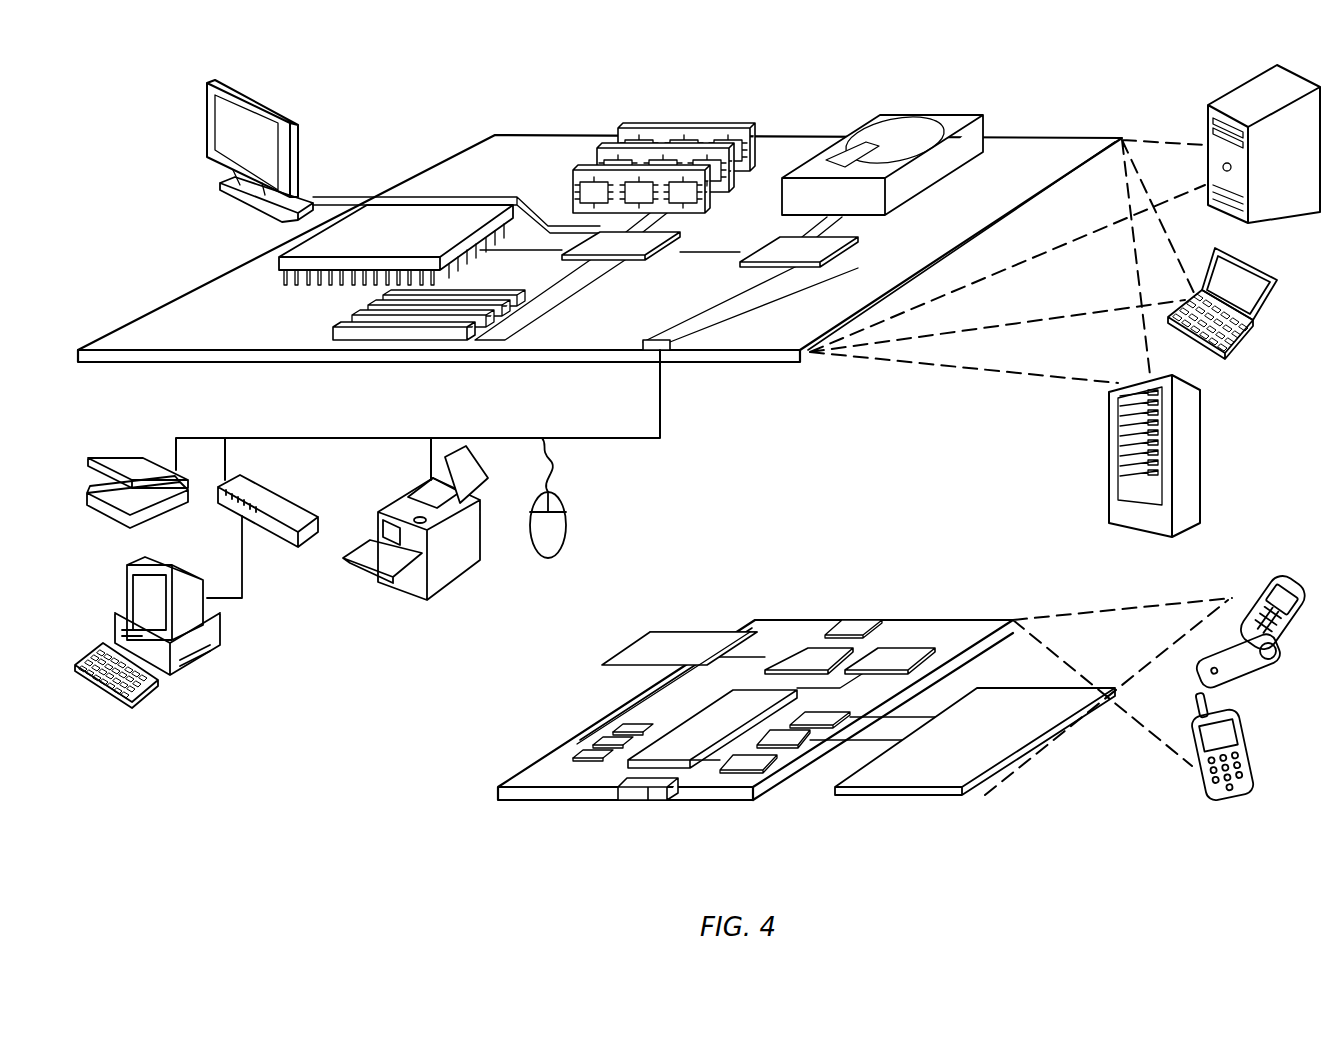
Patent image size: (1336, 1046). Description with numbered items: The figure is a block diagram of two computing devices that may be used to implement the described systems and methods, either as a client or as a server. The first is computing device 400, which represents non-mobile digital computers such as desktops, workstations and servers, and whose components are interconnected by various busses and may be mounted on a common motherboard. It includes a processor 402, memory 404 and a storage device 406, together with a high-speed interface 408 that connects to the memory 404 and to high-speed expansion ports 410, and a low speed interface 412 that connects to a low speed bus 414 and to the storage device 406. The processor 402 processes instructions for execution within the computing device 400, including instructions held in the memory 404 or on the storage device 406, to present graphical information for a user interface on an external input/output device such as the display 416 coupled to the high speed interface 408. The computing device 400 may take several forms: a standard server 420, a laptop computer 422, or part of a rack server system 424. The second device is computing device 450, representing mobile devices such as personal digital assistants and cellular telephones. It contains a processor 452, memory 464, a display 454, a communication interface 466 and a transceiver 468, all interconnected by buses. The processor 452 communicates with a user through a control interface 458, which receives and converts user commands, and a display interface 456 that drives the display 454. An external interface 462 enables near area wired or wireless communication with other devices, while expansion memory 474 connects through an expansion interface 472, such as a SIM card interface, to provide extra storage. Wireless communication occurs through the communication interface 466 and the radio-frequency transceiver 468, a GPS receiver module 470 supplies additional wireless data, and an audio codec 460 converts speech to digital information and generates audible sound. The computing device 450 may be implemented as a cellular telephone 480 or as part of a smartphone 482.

The computing device 400 is at (412, 110).
The processor 402 is at (284, 260).
The memory 404 is at (628, 128).
The storage device 406 is at (870, 114).
The high-speed interface 408 is at (597, 245).
The high-speed expansion ports 410 is at (352, 320).
The low speed interface 412 is at (775, 240).
The low speed bus 414 is at (672, 352).
The display 416 is at (208, 83).
The standard server 420 is at (1208, 122).
The laptop computer 422 is at (1276, 278).
The rack server system 424 is at (1110, 484).
The computing device 450 is at (477, 796).
The processor 452 is at (683, 753).
The display 454 is at (932, 771).
The display interface 456 is at (755, 760).
The control interface 458 is at (796, 740).
The audio codec 460 is at (817, 718).
The external interface 462 is at (648, 788).
The memory 464 is at (605, 749).
The communication interface 466 is at (808, 656).
The transceiver 468 is at (890, 658).
The GPS receiver module 470 is at (864, 630).
The expansion interface 472 is at (727, 629).
The expansion memory 474 is at (652, 632).
The cellular telephone 480 is at (1246, 575).
The smartphone 482 is at (1197, 760).